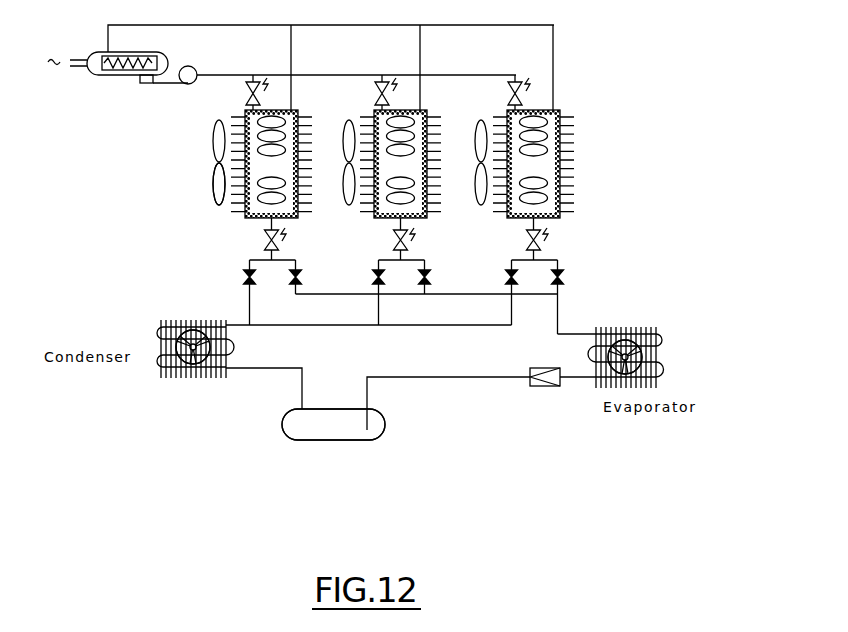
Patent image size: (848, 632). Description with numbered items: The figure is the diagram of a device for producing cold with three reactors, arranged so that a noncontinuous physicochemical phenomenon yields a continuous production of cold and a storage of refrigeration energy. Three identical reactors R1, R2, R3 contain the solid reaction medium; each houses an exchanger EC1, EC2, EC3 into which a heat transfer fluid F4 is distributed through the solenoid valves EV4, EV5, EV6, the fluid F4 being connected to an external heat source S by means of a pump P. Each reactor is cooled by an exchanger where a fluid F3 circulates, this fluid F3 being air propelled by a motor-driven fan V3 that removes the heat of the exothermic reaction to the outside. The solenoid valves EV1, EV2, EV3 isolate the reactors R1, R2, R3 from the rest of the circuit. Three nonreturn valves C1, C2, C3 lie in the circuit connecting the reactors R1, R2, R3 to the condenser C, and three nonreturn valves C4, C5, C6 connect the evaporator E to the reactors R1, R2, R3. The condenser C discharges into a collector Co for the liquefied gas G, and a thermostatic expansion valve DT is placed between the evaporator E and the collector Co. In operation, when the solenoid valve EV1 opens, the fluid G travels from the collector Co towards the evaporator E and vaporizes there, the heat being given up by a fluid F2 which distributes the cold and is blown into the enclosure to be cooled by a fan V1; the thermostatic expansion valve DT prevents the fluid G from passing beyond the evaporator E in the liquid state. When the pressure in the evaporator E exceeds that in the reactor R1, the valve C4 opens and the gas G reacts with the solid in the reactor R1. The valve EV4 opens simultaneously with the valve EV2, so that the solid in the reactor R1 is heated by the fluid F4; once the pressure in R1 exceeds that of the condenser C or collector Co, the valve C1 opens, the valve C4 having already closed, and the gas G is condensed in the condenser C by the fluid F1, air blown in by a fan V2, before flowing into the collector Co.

The external heat source S is at (81, 81).
The heat transfer fluid F4 is at (164, 91).
The pump P is at (193, 69).
The solenoid valve EV4 is at (238, 92).
The solenoid valve EV5 is at (367, 92).
The solenoid valve EV6 is at (500, 92).
The exchanger EC1 is at (304, 67).
The exchanger EC2 is at (433, 67).
The exchanger EC3 is at (576, 67).
The reactor R1 is at (271, 164).
The reactor R2 is at (400, 164).
The reactor R3 is at (533, 164).
The fluid F3 is at (337, 162).
The motor-driven fan V3 is at (216, 190).
The solenoid valve EV1 is at (296, 239).
The solenoid valve EV2 is at (425, 239).
The solenoid valve EV3 is at (559, 239).
The nonreturn valve C1 is at (236, 296).
The nonreturn valve C2 is at (366, 296).
The nonreturn valve C3 is at (497, 296).
The nonreturn valve C4 is at (308, 280).
The nonreturn valve C5 is at (437, 280).
The nonreturn valve C6 is at (570, 300).
The fluid F1 is at (193, 328).
The condenser C is at (146, 363).
The fan V2 is at (193, 367).
The liquefied gas G is at (333, 424).
The collector Co is at (310, 427).
The thermostatic expansion valve DT is at (545, 389).
The fluid F2 is at (625, 337).
The evaporator E is at (680, 353).
The fan V1 is at (655, 384).